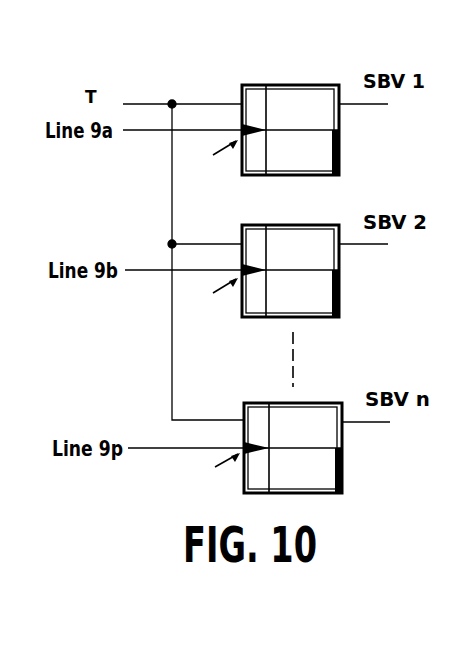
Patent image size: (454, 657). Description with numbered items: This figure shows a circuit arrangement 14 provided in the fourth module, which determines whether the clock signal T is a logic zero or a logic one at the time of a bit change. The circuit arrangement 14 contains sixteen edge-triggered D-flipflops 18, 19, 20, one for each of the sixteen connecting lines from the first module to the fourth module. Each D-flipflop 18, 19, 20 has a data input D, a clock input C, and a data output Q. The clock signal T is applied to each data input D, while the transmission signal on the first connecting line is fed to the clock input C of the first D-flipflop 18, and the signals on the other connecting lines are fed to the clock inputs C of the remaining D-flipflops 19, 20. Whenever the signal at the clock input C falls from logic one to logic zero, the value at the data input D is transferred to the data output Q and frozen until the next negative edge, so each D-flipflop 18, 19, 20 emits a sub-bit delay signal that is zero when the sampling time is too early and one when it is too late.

The circuit arrangement 14 is at (284, 60).
The first D-flipflop 18 is at (327, 152).
The D-flipflop 19 is at (327, 292).
The D-flipflop 20 is at (329, 470).